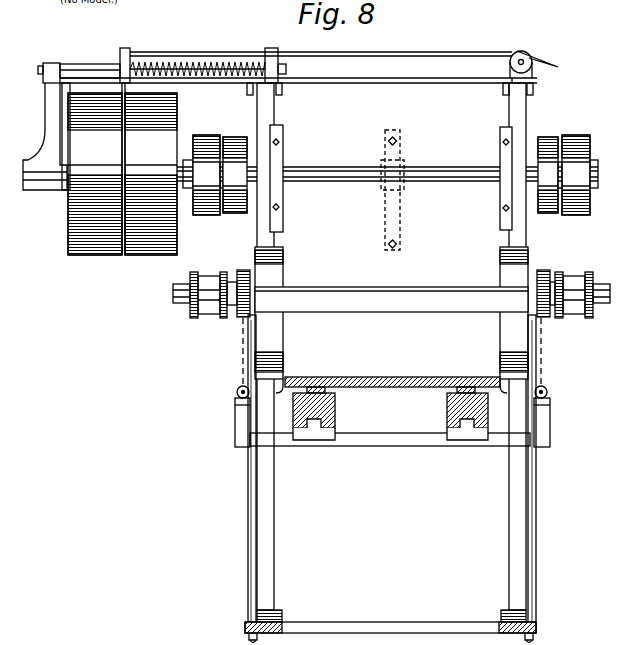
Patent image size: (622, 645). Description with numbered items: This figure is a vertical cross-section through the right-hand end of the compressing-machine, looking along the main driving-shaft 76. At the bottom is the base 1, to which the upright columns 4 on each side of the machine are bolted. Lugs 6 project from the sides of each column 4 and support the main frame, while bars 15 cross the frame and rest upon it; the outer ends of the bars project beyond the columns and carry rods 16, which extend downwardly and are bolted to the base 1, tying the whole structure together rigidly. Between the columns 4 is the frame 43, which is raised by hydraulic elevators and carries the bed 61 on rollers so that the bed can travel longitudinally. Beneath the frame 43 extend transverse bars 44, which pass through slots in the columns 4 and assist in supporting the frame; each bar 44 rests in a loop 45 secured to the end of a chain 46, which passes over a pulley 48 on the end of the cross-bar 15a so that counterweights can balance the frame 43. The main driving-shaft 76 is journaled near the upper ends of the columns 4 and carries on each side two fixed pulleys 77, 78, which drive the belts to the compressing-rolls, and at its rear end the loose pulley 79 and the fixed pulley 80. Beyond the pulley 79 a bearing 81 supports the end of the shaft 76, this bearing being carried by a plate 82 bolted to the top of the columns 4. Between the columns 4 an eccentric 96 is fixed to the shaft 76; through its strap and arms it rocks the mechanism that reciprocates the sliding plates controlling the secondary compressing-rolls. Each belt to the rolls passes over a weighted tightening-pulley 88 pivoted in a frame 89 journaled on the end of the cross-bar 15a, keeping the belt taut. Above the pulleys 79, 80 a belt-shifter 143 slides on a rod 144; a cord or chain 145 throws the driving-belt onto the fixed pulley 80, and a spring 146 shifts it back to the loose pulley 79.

The base 1 is at (400, 627).
The column 4 is at (272, 523).
The lug 6 is at (283, 356).
The bar 15 is at (381, 308).
The cross-bar 15a is at (369, 289).
The rod 16 is at (248, 540).
The frame 43 is at (390, 416).
The bar 44 is at (388, 443).
The loop 45 is at (235, 419).
The chain 46 is at (243, 360).
The pulley 48 is at (241, 270).
The bed 61 is at (387, 375).
The main driving-shaft 76 is at (320, 180).
The pulley 77 is at (205, 150).
The pulley 78 is at (234, 143).
The loose pulley 79 is at (95, 174).
The fixed pulley 80 is at (149, 169).
The bearing 81 is at (46, 136).
The plate 82 is at (196, 84).
The tightening-pulley 88 is at (391, 306).
The frame 89 is at (180, 302).
The eccentric 96 is at (401, 200).
The belt-shifter 143 is at (158, 61).
The rod 144 is at (160, 66).
The cord or chain 145 is at (416, 47).
The spring 146 is at (226, 66).